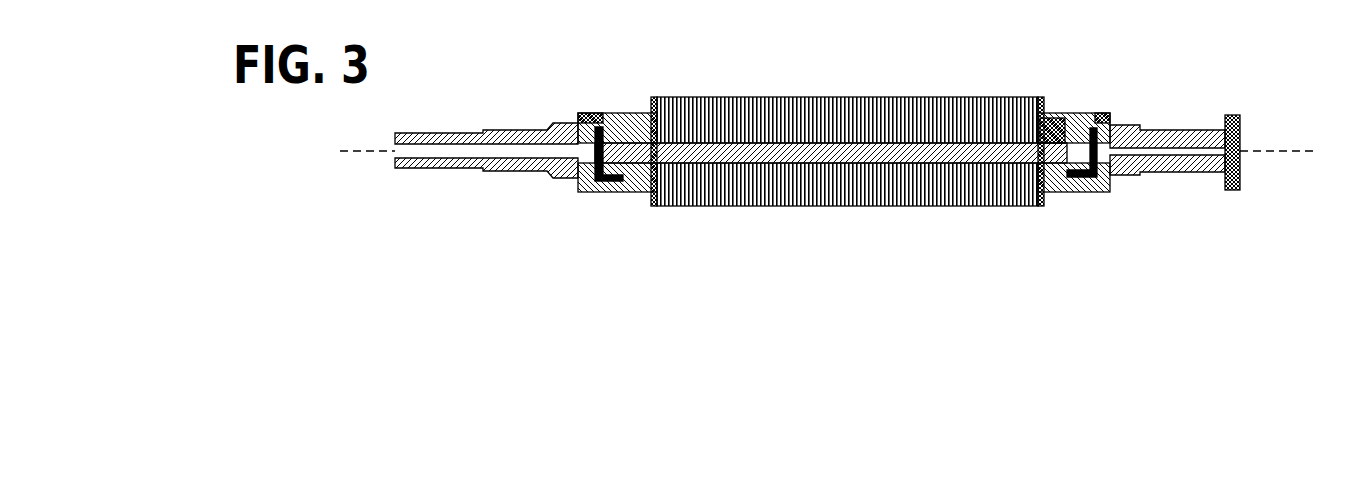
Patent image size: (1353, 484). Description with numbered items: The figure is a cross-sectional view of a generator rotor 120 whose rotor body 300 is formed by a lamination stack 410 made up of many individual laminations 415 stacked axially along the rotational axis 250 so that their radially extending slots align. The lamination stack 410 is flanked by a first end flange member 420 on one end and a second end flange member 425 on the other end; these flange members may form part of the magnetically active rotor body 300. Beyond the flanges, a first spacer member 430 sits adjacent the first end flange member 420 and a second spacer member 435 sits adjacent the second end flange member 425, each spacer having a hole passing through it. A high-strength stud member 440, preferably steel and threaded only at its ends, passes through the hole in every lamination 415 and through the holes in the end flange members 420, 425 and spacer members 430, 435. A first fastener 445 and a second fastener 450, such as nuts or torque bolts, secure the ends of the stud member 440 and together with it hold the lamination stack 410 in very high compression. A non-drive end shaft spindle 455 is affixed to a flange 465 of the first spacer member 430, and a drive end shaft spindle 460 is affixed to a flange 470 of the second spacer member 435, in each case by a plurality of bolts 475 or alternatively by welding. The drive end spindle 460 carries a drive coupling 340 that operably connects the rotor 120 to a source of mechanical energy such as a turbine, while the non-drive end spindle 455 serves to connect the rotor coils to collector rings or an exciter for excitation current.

The rotor 120 is at (752, 240).
The rotational axis 250 is at (378, 157).
The rotor body 300 is at (950, 210).
The drive coupling 340 is at (1232, 108).
The lamination stack 410 is at (1025, 83).
The lamination 415 is at (830, 180).
The first end flange member 420 is at (652, 185).
The second end flange member 425 is at (1037, 182).
The first spacer member 430 is at (622, 122).
The second spacer member 435 is at (1052, 125).
The stud member 440 is at (983, 157).
The first fastener 445 is at (616, 183).
The second fastener 450 is at (1077, 133).
The non-drive end shaft spindle 455 is at (557, 182).
The drive end shaft spindle 460 is at (1137, 168).
The flange 465 is at (585, 192).
The flange 470 is at (1103, 192).
The bolts 475 is at (594, 113).